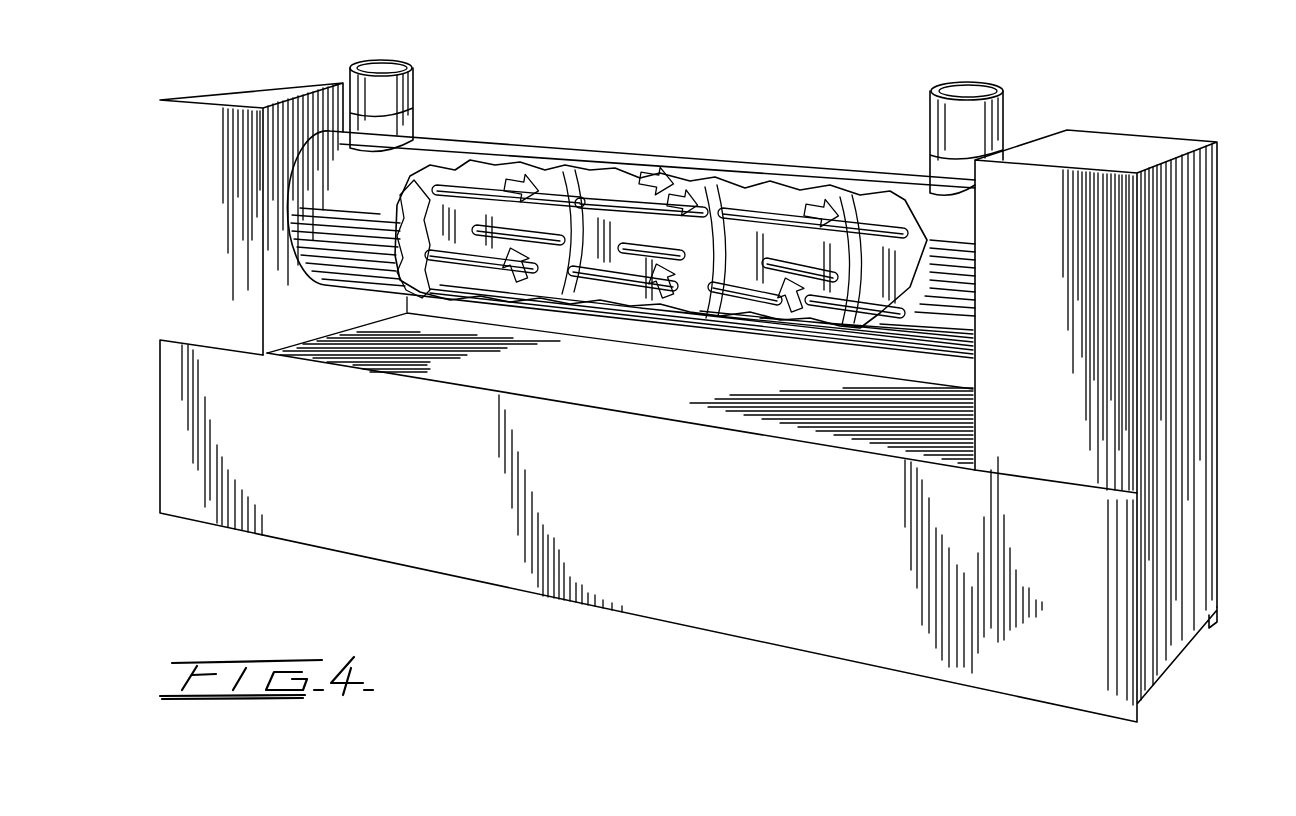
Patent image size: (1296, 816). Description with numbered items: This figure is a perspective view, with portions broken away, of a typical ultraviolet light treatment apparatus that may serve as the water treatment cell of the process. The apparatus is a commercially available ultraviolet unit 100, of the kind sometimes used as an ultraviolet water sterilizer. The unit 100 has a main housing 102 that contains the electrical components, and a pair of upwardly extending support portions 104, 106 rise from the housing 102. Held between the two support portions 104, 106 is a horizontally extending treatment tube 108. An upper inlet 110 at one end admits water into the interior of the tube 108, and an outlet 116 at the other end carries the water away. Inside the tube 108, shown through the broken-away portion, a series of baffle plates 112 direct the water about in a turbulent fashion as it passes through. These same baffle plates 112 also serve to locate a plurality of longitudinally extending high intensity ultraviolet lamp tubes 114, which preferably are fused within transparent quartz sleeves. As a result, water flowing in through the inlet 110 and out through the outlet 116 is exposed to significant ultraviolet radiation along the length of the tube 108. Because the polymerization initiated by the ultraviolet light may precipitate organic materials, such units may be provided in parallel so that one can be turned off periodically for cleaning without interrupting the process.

The ultraviolet unit 100 is at (1226, 229).
The main housing 102 is at (1067, 658).
The support portion 104 is at (201, 128).
The support portion 106 is at (1067, 197).
The treatment tube 108 is at (522, 153).
The upper inlet 110 is at (370, 128).
The baffle plates 112 is at (412, 282).
The ultraviolet lamp tubes 114 is at (452, 192).
The outlet 116 is at (950, 175).